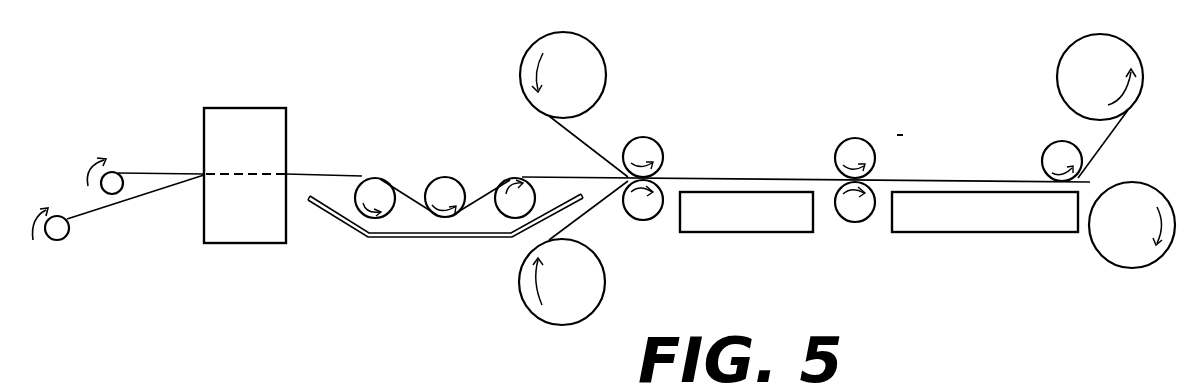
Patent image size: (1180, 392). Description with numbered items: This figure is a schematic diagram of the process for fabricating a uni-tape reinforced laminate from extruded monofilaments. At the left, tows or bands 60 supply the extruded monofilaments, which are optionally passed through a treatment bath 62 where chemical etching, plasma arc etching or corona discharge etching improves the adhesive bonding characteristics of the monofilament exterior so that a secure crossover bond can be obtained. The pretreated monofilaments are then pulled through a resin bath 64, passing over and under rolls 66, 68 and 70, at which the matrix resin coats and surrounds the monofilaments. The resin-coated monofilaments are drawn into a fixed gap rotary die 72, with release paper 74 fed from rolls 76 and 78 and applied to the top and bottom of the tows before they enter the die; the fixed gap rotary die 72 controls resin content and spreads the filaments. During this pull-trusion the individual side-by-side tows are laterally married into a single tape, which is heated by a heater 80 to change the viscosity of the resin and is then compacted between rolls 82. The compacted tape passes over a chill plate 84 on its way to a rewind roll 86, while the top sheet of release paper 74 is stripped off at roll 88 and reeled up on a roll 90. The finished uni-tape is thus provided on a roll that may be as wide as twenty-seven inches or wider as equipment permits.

The tows or bands 60 is at (103, 193).
The treatment bath 62 is at (256, 143).
The resin bath 64 is at (420, 255).
The roll 66 is at (382, 177).
The roll 68 is at (448, 177).
The roll 70 is at (512, 177).
The fixed gap rotary die 72 is at (647, 140).
The release paper 74 is at (587, 140).
The roll 76 is at (574, 84).
The roll 78 is at (576, 296).
The heater 80 is at (742, 233).
The rolls 82 is at (840, 152).
The chill plate 84 is at (988, 233).
The rewind roll 86 is at (1142, 229).
The roll 88 is at (1048, 154).
The roll 90 is at (1108, 89).